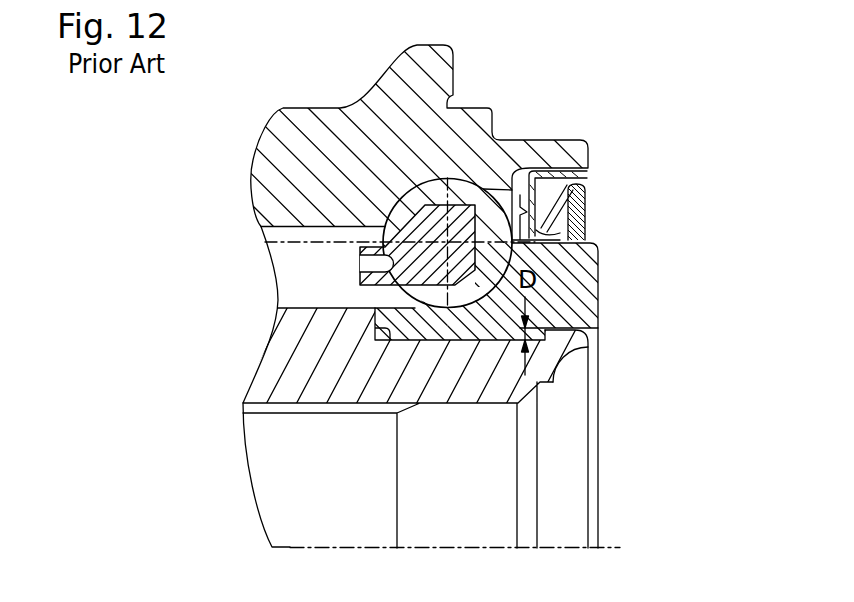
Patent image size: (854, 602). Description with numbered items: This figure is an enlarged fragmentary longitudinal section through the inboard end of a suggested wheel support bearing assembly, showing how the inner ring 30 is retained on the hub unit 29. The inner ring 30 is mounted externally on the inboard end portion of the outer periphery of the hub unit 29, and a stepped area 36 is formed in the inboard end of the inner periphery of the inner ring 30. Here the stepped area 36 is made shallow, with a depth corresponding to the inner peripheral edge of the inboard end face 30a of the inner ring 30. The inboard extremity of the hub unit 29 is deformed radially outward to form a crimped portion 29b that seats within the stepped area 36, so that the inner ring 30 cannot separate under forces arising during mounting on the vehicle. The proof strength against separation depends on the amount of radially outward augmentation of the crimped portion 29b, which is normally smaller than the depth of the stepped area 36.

The hub unit 29 is at (270, 380).
The crimped portion 29b is at (563, 363).
The inner ring 30 is at (397, 325).
The inboard end face 30a is at (600, 272).
The stepped area 36 is at (600, 347).